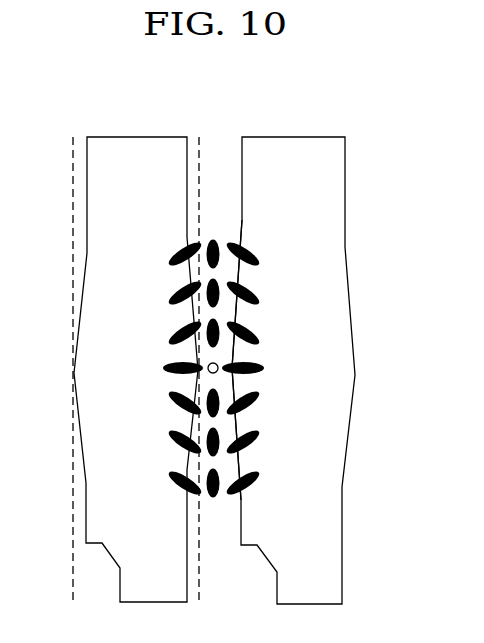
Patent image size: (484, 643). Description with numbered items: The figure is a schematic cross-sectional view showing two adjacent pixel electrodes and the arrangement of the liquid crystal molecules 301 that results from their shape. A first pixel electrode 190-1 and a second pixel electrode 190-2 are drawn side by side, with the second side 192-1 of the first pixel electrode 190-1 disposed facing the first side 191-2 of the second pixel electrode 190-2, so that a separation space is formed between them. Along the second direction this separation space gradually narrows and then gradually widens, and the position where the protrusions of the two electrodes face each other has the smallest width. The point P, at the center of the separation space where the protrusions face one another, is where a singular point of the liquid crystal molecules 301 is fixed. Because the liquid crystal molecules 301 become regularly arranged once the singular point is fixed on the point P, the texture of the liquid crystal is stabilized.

The first pixel electrode 190-1 is at (101, 117).
The second pixel electrode 190-2 is at (328, 122).
The first side of second pixel electrode 191-2 is at (230, 147).
The second side of first pixel electrode 192-1 is at (203, 148).
The liquid crystal molecules 301 is at (255, 295).
The point P is at (218, 367).